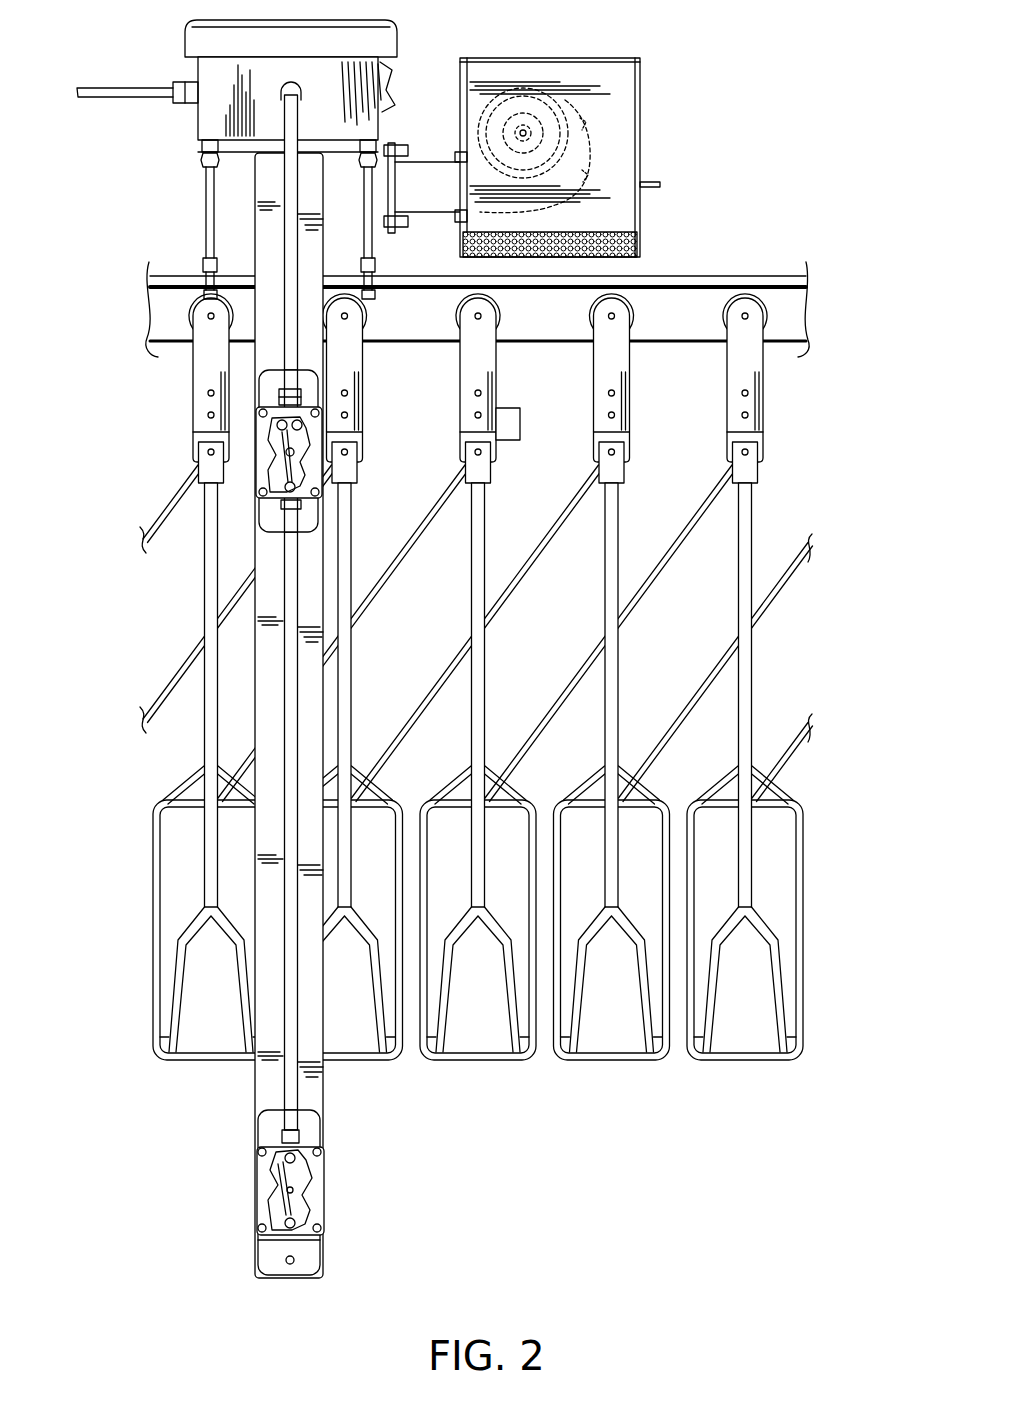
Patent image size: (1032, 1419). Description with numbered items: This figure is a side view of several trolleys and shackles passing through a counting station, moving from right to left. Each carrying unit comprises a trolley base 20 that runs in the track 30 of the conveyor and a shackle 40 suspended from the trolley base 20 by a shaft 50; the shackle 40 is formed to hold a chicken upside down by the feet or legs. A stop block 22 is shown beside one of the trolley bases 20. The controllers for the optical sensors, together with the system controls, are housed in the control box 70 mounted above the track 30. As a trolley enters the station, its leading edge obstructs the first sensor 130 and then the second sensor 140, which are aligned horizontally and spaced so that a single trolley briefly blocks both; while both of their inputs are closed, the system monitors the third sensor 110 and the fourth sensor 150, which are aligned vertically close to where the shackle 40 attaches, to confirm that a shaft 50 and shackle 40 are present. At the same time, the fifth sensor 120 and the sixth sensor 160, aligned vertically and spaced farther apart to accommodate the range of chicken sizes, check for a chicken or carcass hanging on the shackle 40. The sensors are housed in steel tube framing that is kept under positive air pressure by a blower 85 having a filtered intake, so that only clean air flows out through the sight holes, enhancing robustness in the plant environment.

The trolley base 20 is at (461, 405).
The stop block 22 is at (510, 441).
The track 30 is at (688, 278).
The shackle 40 is at (803, 973).
The shaft 50 is at (756, 559).
The control box 70 is at (186, 52).
The blower 85 is at (641, 102).
The Sensor 3 110 is at (265, 447).
The Sensor 5 120 is at (248, 1192).
The Sensor 1 130 is at (287, 410).
The Sensor 2 140 is at (276, 428).
The Sensor 4 150 is at (278, 487).
The Sensor 6 160 is at (287, 1222).